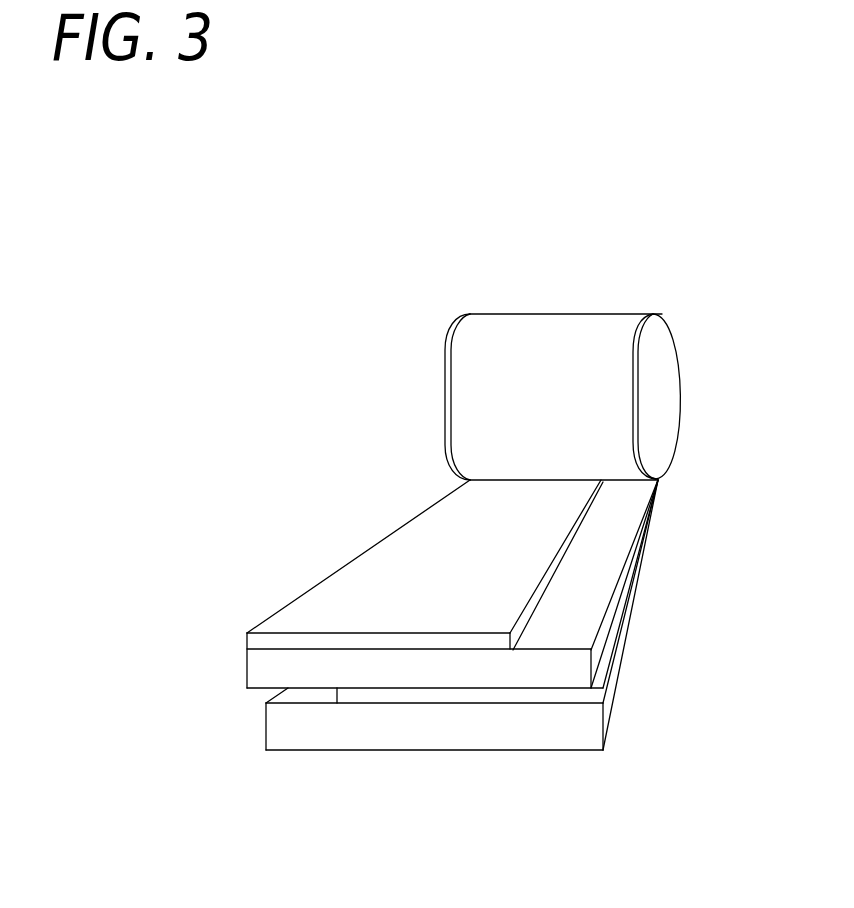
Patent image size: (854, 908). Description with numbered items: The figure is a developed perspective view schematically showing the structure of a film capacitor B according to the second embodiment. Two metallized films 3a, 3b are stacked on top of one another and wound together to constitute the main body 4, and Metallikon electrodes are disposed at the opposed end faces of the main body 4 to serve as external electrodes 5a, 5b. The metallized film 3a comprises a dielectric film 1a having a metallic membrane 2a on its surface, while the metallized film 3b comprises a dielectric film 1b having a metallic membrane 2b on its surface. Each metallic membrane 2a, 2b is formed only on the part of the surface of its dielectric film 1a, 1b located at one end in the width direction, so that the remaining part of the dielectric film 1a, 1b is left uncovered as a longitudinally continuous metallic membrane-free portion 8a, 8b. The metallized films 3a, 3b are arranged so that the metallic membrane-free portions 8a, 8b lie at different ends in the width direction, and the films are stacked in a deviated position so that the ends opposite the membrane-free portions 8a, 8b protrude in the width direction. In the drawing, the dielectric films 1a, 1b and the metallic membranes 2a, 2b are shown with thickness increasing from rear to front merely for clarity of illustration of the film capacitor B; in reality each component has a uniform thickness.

The main body 4 is at (563, 327).
The external electrode 5a is at (445, 390).
The external electrode 5b is at (675, 378).
The film capacitor B is at (653, 280).
The dielectric film 1a is at (273, 670).
The metallic membrane 2a is at (317, 647).
The metallized film 3a is at (318, 495).
The metallic membrane-free portion 8a is at (598, 575).
The metallic membrane-free portion 8b is at (283, 690).
The dielectric film 1b is at (423, 728).
The metallic membrane 2b is at (517, 700).
The metallized film 3b is at (542, 840).